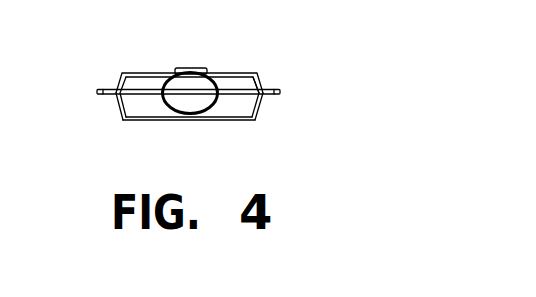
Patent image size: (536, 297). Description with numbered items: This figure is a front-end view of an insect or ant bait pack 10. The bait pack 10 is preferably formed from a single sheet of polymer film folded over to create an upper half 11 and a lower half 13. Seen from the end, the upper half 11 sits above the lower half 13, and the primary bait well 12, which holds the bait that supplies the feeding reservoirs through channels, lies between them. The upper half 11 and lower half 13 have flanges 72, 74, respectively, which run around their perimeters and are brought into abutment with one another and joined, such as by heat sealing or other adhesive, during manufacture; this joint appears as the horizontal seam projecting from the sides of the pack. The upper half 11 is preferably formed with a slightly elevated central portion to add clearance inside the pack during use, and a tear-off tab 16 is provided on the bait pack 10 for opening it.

The ant bait pack 10 is at (252, 52).
The upper half 11 is at (131, 70).
The primary bait well 12 is at (137, 107).
The lower half 13 is at (263, 123).
The tear-off tab 16 is at (188, 102).
The flange 72 is at (272, 82).
The flange 74 is at (270, 97).